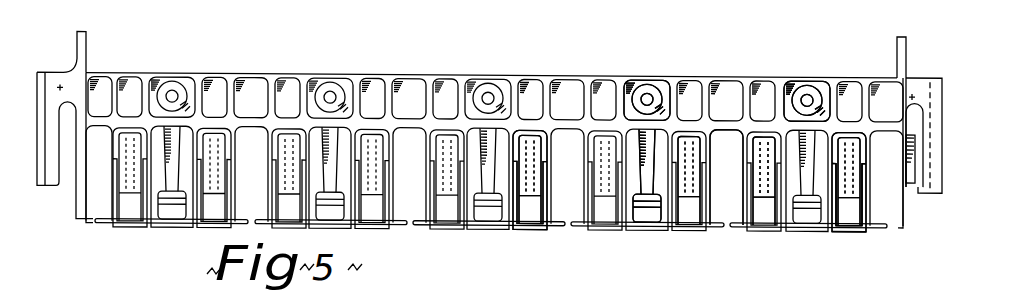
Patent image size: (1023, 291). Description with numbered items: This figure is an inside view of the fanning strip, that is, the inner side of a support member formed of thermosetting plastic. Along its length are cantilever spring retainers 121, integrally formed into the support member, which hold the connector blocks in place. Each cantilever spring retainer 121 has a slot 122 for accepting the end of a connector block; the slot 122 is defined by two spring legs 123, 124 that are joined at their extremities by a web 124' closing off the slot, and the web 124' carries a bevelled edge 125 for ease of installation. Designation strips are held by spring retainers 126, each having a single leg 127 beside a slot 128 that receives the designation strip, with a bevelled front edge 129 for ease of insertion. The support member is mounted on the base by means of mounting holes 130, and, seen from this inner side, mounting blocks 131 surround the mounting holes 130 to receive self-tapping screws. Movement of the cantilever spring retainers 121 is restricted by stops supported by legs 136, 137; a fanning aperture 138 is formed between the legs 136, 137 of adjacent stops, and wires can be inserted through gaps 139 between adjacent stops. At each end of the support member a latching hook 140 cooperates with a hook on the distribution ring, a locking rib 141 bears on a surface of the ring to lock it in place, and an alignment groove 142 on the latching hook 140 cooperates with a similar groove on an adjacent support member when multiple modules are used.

The cantilever spring retainer 121 is at (510, 236).
The slot 122 is at (535, 228).
The spring leg 123 is at (552, 210).
The spring leg 124 is at (653, 219).
The web 124' is at (850, 220).
The bevelled edge 125 is at (527, 228).
The spring retainer 126 is at (640, 213).
The single leg 127 is at (658, 197).
The slot 128 is at (648, 200).
The bevelled front edge 129 is at (633, 212).
The mounting hole 130 is at (645, 97).
The mounting block 131 is at (657, 86).
The leg 136 is at (690, 145).
The leg 137 is at (764, 148).
The fanning aperture 138 is at (722, 143).
The gap 139 is at (408, 227).
The latching hook 140 is at (920, 92).
The locking rib 141 is at (912, 143).
The alignment groove 142 is at (940, 147).